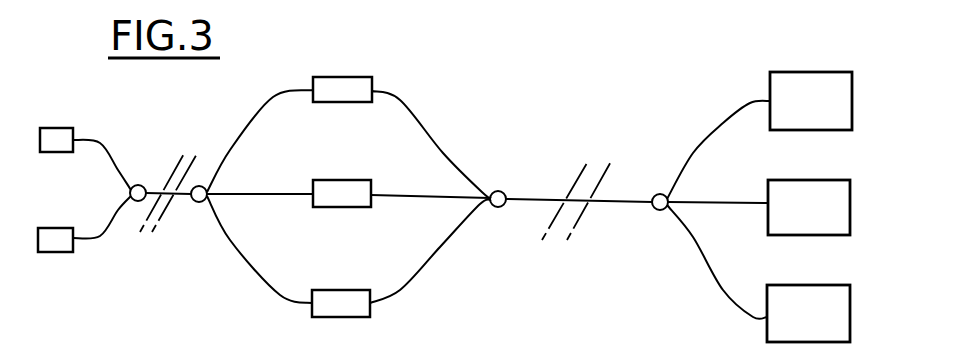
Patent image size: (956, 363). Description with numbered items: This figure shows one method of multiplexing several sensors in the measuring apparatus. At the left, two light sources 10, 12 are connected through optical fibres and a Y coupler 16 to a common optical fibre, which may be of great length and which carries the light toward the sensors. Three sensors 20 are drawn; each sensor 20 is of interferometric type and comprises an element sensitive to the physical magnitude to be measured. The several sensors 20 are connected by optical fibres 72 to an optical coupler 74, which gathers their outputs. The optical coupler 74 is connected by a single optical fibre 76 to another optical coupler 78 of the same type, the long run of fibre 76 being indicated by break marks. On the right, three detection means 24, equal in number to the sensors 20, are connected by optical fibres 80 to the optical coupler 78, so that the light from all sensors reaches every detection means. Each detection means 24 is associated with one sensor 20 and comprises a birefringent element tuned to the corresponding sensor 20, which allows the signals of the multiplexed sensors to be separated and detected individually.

The light source 10 is at (52, 128).
The light source 12 is at (60, 228).
The Y coupler 16 is at (143, 186).
The sensor 20 is at (335, 83).
The detection means 24 is at (828, 111).
The optical fibre 72 is at (447, 160).
The optical coupler 74 is at (502, 189).
The optical fibre 76 is at (537, 203).
The optical coupler 78 is at (664, 191).
The optical fibre 80 is at (722, 127).